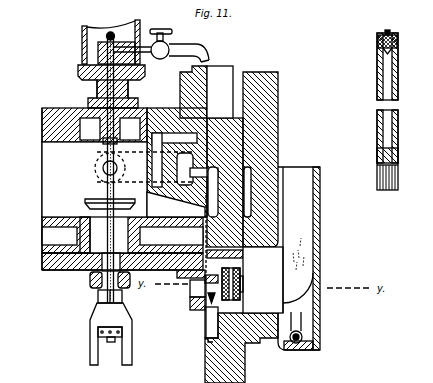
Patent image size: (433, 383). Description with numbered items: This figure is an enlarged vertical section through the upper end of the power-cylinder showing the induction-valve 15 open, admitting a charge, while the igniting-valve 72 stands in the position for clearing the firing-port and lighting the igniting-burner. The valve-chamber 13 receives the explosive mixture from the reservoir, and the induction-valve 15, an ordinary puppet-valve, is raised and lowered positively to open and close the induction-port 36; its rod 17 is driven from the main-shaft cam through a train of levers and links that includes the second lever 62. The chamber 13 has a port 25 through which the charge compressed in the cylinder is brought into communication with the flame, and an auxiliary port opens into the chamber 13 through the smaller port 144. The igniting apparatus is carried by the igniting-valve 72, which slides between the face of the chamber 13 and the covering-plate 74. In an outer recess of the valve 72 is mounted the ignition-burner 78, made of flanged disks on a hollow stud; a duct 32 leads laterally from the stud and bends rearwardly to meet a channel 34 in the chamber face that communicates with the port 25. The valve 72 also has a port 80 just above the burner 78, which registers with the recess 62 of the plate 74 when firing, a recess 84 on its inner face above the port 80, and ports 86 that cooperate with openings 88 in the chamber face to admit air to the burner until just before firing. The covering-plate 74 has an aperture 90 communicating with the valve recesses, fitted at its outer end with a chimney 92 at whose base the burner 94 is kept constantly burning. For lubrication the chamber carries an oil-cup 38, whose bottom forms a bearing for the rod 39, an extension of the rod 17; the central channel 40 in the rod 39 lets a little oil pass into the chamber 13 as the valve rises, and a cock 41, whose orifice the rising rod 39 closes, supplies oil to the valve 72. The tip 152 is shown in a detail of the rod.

The valve-chamber 13 is at (94, 179).
The induction-valve 15 is at (88, 206).
The valve-rod 17 is at (112, 288).
The port 25 is at (182, 217).
The duct 32 is at (206, 306).
The channel 34 is at (203, 237).
The induction-port 36 is at (91, 235).
The oil-cup 38 is at (98, 42).
The rod 39 is at (122, 89).
The central channel 40 is at (98, 89).
The cock 41 is at (162, 45).
The second lever 62 is at (249, 198).
The igniting-valve 72 is at (229, 224).
The covering-plate 74 is at (260, 159).
The ignition-burner 78 is at (241, 298).
The port 80 is at (233, 252).
The recess 84 is at (213, 201).
The ports 86 is at (192, 170).
The openings 88 is at (190, 297).
The aperture 90 is at (263, 280).
The chimney 92 is at (283, 207).
The burner 94 is at (303, 331).
The port 144 is at (97, 163).
The tip 152 is at (389, 36).